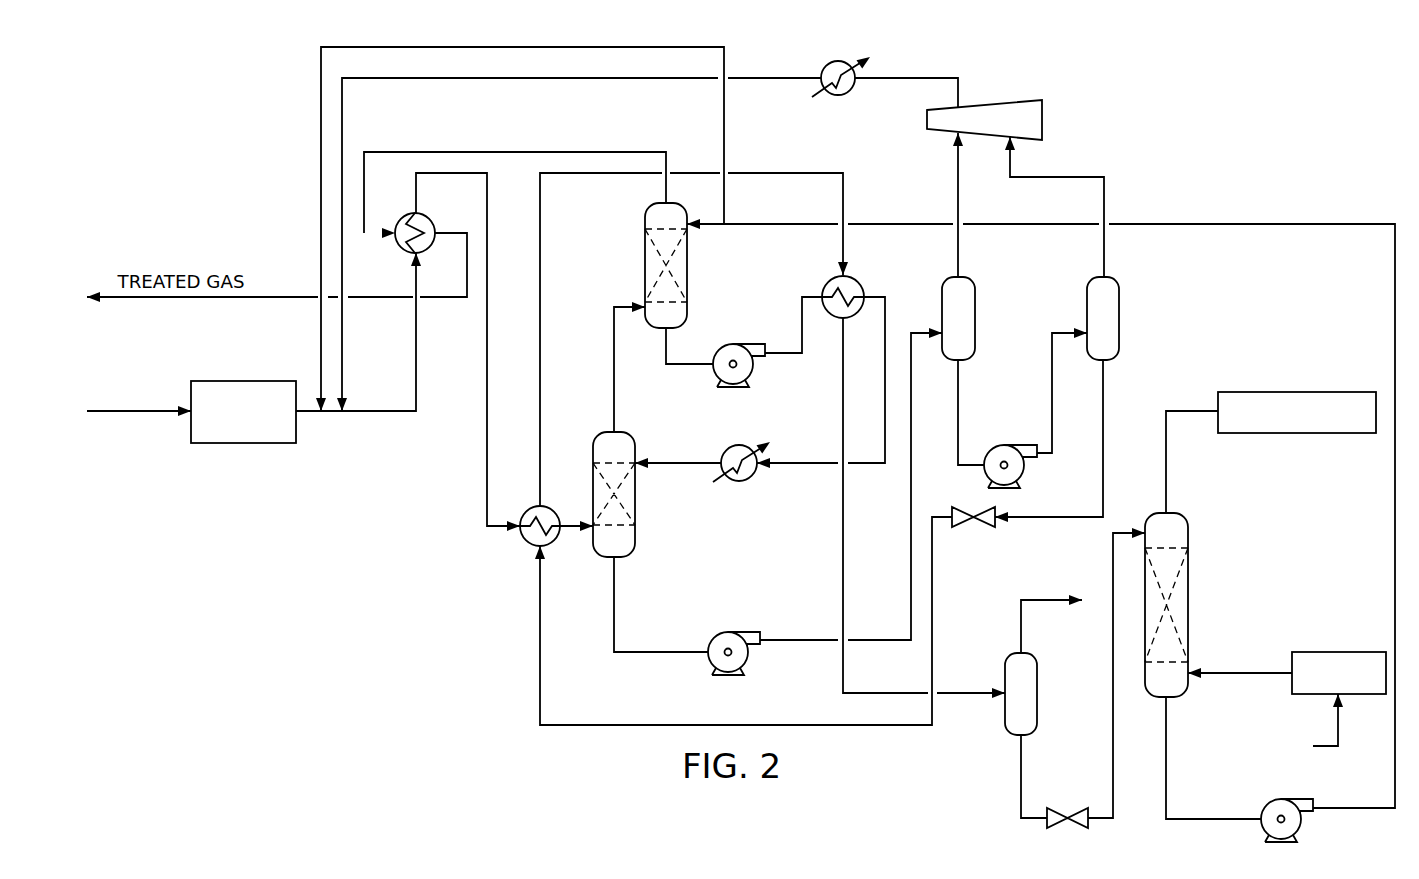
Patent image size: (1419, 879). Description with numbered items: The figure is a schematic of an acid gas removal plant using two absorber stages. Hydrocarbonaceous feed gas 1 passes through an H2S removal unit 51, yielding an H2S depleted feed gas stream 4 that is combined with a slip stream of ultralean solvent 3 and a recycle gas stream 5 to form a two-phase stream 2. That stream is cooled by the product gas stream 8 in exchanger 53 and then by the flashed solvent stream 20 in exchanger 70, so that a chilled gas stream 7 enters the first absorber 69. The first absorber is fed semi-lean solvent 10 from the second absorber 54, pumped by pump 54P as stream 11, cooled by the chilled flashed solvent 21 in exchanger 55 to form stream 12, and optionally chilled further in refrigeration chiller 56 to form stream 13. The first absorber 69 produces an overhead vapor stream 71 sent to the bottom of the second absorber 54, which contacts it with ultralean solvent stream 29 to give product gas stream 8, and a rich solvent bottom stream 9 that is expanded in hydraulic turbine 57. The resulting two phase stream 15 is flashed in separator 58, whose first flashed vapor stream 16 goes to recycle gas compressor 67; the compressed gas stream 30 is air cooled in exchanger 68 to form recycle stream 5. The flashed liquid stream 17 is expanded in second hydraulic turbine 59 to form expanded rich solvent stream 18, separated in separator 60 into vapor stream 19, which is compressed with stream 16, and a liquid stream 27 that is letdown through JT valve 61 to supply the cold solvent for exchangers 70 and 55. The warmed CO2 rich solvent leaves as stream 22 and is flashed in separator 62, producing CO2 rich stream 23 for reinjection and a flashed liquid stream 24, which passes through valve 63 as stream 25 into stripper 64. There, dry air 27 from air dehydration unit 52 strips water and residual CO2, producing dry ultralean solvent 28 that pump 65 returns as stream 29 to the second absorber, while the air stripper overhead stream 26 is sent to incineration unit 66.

The hydrocarbonaceous feed gas 1 is at (137, 415).
The two-phase stream 2 is at (379, 415).
The slip stream of ultralean solvent 3 is at (519, 45).
The H2S depleted feed gas stream 4 is at (307, 415).
The recycle gas stream 5 is at (532, 80).
The chilled gas stream 7 is at (573, 530).
The product gas stream 8 is at (576, 150).
The rich solvent bottom stream 9 is at (612, 606).
The semi-lean solvent 10 is at (692, 366).
The pumped semi-lean solvent stream 11 is at (780, 357).
The cooled semi-lean solvent stream 12 is at (880, 300).
The chilled semi-lean solvent stream 13 is at (703, 461).
The two phase stream 15 is at (908, 479).
The first flashed vapor stream 16 is at (962, 256).
The flashed liquid stream 17 is at (962, 393).
The expanded rich solvent stream 18 is at (1050, 400).
The flash vapor stream 19 is at (1108, 256).
The flashed solvent stream 20 is at (933, 611).
The chilled flashed solvent stream 21 is at (776, 172).
The CO2 rich solvent stream 22 is at (840, 549).
The CO2 rich stream 23 is at (1048, 601).
The flashed liquid stream 24 is at (1017, 781).
The stripper feed stream 25 is at (1112, 677).
The air stripper overhead stream 26 is at (1189, 410).
The dry air stream 27 is at (1106, 431).
The dry and ultralean solvent 28 is at (1168, 739).
The ultralean solvent stream 29 is at (1393, 757).
The compressed gas stream 30 is at (912, 78).
The H2S removal unit 51 is at (245, 380).
The air dehydration unit 52 is at (1352, 651).
The exchanger 53 is at (398, 247).
The second absorber 54 is at (688, 266).
The pump 54P is at (735, 343).
The exchanger 55 is at (826, 286).
The refrigeration chiller 56 is at (740, 484).
The hydraulic turbine 57 is at (728, 631).
The separator 58 is at (977, 310).
The second hydraulic turbine 59 is at (1021, 478).
The separator 60 is at (1121, 291).
The JT valve 61 is at (966, 529).
The separator 62 is at (1003, 711).
The valve 63 is at (1072, 811).
The stripper 64 is at (1190, 606).
The pump 65 is at (1262, 809).
The incineration unit 66 is at (1298, 435).
The recycle gas compressor 67 is at (980, 108).
The exchanger 68 is at (838, 60).
The first absorber 69 is at (637, 496).
The exchanger 70 is at (523, 541).
The overhead vapor stream 71 is at (630, 306).